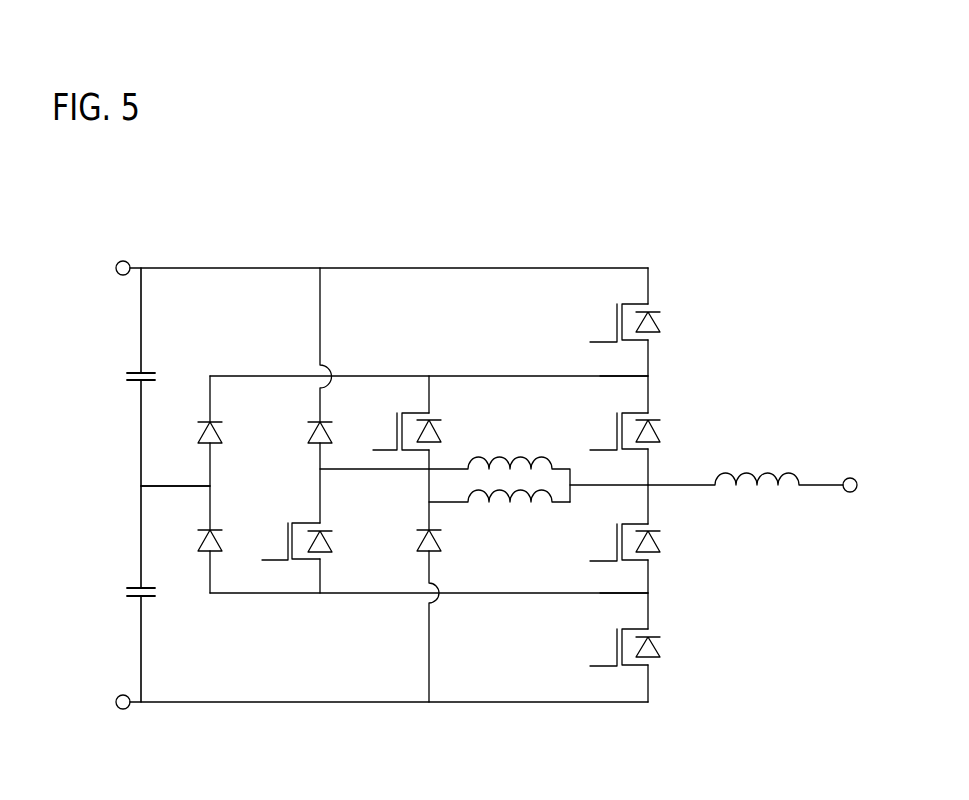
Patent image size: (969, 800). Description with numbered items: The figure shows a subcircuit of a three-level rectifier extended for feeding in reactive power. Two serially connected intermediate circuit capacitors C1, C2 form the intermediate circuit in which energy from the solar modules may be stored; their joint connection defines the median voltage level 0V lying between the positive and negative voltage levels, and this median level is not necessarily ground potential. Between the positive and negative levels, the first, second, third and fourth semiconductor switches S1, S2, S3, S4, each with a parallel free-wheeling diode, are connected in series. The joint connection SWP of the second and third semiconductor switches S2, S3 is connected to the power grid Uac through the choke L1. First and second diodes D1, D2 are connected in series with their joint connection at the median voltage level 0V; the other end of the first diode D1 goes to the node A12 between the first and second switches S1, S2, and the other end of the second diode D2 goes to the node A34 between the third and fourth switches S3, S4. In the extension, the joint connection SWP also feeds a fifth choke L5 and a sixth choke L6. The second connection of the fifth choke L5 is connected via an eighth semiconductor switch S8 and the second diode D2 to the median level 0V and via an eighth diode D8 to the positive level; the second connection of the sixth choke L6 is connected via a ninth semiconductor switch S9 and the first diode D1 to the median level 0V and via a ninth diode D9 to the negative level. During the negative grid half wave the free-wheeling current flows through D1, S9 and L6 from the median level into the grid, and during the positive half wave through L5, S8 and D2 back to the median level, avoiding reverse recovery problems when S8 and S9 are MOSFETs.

The median voltage level 0V is at (152, 467).
The intermediate circuit capacitor C1 is at (115, 379).
The intermediate circuit capacitor C2 is at (121, 593).
The first diode D1 is at (193, 433).
The second diode D2 is at (193, 543).
The eighth diode D8 is at (303, 433).
The ninth diode D9 is at (448, 544).
The first semiconductor switch S1 is at (623, 323).
The second semiconductor switch S2 is at (623, 431).
The third semiconductor switch S3 is at (623, 542).
The fourth semiconductor switch S4 is at (623, 647).
The eighth semiconductor switch S8 is at (291, 540).
The ninth semiconductor switch S9 is at (426, 432).
The fifth choke L5 is at (445, 462).
The sixth choke L6 is at (499, 516).
The choke L1 is at (745, 499).
The joint connection SWP is at (650, 487).
The node between switches S1 and S2 A12 is at (648, 376).
The node between switches S3 and S4 A34 is at (648, 593).
The power grid Uac is at (856, 503).